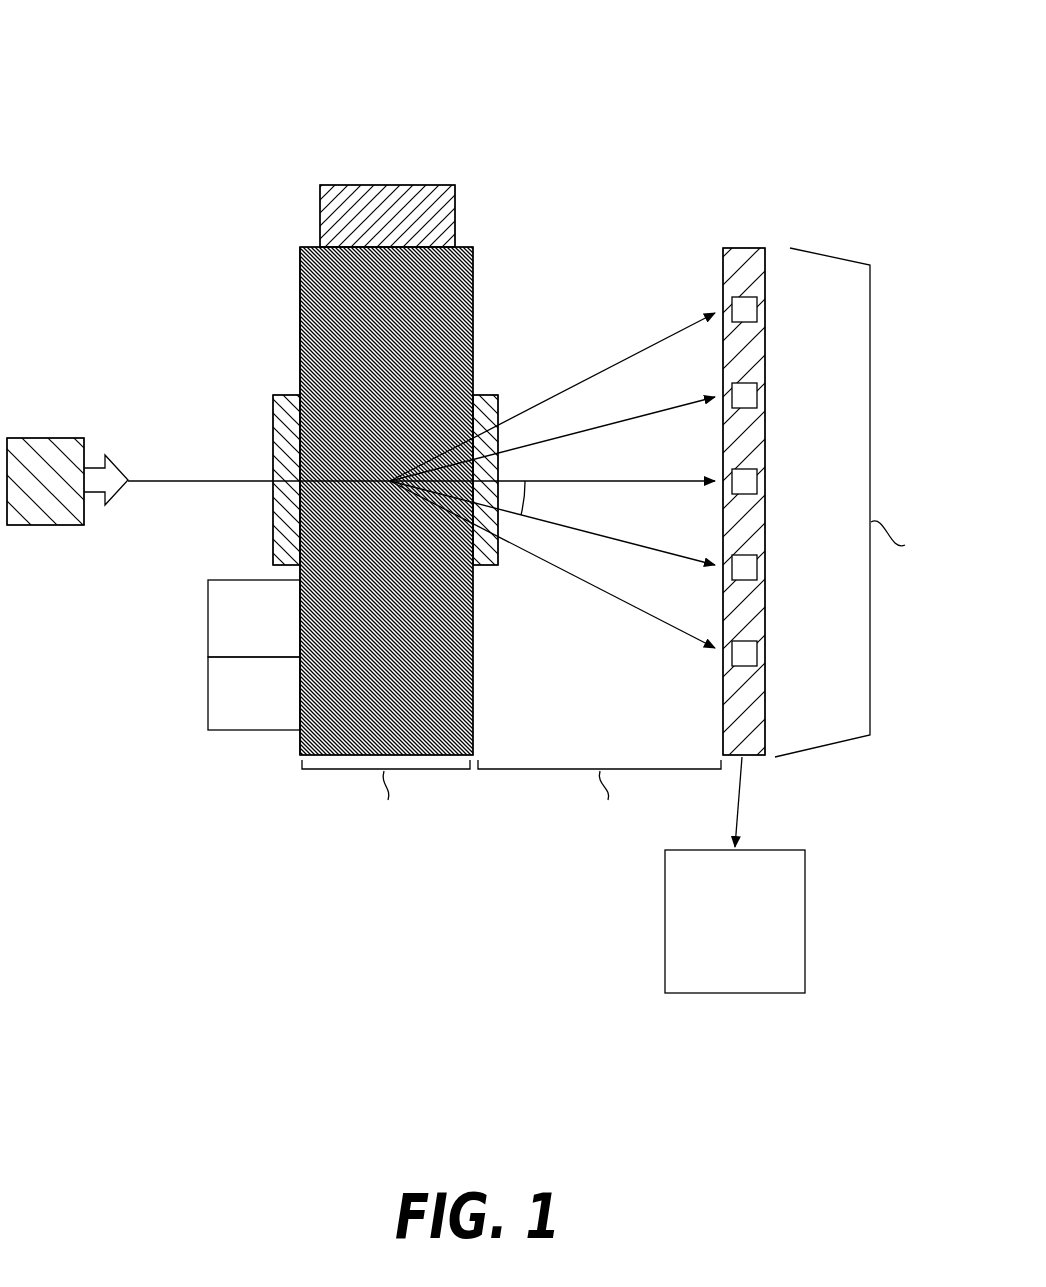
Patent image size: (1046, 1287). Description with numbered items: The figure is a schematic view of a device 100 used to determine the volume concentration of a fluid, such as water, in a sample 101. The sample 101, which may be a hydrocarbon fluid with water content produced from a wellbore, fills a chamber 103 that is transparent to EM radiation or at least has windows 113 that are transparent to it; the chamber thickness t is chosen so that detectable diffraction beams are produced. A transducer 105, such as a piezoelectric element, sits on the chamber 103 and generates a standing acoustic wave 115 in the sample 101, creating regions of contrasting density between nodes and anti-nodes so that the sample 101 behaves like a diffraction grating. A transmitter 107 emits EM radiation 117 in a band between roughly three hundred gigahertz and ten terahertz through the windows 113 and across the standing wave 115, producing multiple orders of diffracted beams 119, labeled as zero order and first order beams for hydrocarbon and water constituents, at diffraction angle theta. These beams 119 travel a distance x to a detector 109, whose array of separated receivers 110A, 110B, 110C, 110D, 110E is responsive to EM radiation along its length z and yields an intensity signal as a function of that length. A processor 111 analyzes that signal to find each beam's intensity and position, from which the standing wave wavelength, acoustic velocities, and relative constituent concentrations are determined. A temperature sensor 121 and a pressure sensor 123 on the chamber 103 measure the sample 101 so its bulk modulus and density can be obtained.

The device 100 is at (107, 94).
The sample 101 is at (402, 318).
The chamber 103 is at (300, 280).
The transducer 105 is at (406, 226).
The transmitter 107 is at (63, 494).
The detector 109 is at (748, 247).
The receiver 110A is at (757, 310).
The receiver 110B is at (757, 396).
The receiver 110C is at (757, 482).
The receiver 110D is at (757, 568).
The receiver 110E is at (757, 654).
The processor 111 is at (754, 926).
The windows 113 is at (273, 420).
The standing acoustic wave 115 is at (282, 318).
The EM radiation 117 is at (204, 484).
The diffracted beams 119 is at (612, 304).
The temperature sensor 121 is at (271, 631).
The pressure sensor 123 is at (271, 703).